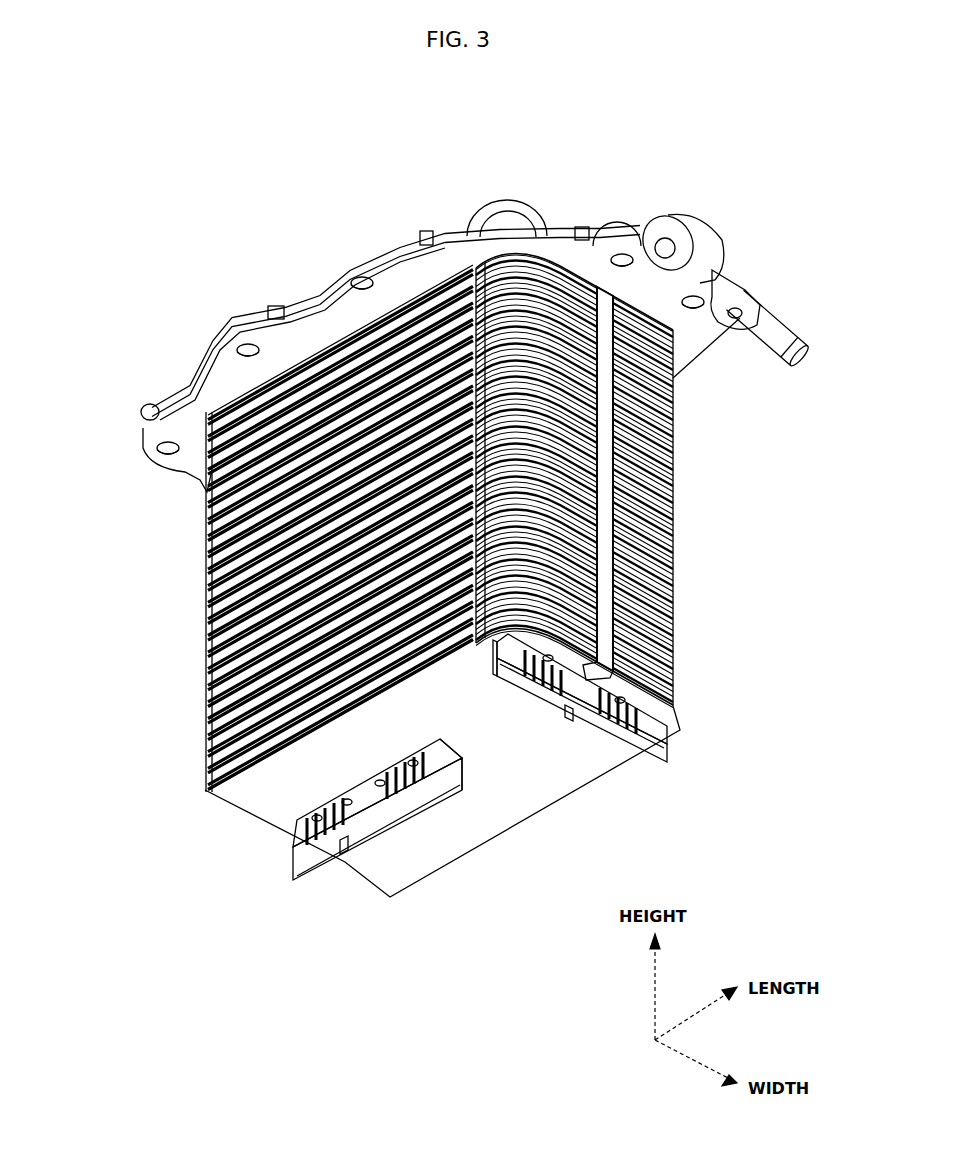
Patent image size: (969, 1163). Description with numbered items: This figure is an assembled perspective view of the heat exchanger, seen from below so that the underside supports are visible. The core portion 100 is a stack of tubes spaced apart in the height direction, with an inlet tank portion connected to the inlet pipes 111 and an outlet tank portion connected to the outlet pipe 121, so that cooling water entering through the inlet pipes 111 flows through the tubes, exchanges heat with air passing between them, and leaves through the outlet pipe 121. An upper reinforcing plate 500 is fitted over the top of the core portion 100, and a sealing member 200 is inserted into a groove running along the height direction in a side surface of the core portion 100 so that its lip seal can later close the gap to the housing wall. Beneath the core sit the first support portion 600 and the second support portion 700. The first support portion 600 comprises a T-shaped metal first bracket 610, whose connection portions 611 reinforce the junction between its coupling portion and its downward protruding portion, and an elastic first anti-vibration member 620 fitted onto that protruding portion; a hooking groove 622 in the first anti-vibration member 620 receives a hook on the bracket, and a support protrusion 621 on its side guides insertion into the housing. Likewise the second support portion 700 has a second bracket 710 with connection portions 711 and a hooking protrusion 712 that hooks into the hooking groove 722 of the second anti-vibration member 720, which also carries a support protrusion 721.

The core portion 100 is at (673, 450).
The inlet pipes 111 is at (772, 340).
The outlet pipe 121 is at (672, 222).
The sealing members 200 is at (673, 413).
The upper reinforcing plate 500 is at (148, 445).
The first support portion 600 is at (662, 761).
The first bracket 610 is at (638, 689).
The connection portions 611 is at (635, 660).
The first anti-vibration member 620 is at (650, 740).
The support protrusion 621 is at (493, 665).
The hooking groove 622 is at (570, 725).
The second support portion 700 is at (302, 846).
The second bracket 710 is at (304, 817).
The connection portions 711 is at (284, 798).
The hooking protrusion 712 is at (340, 803).
The second anti-vibration member 720 is at (285, 860).
The support protrusion 721 is at (443, 793).
The hooking groove 722 is at (345, 850).